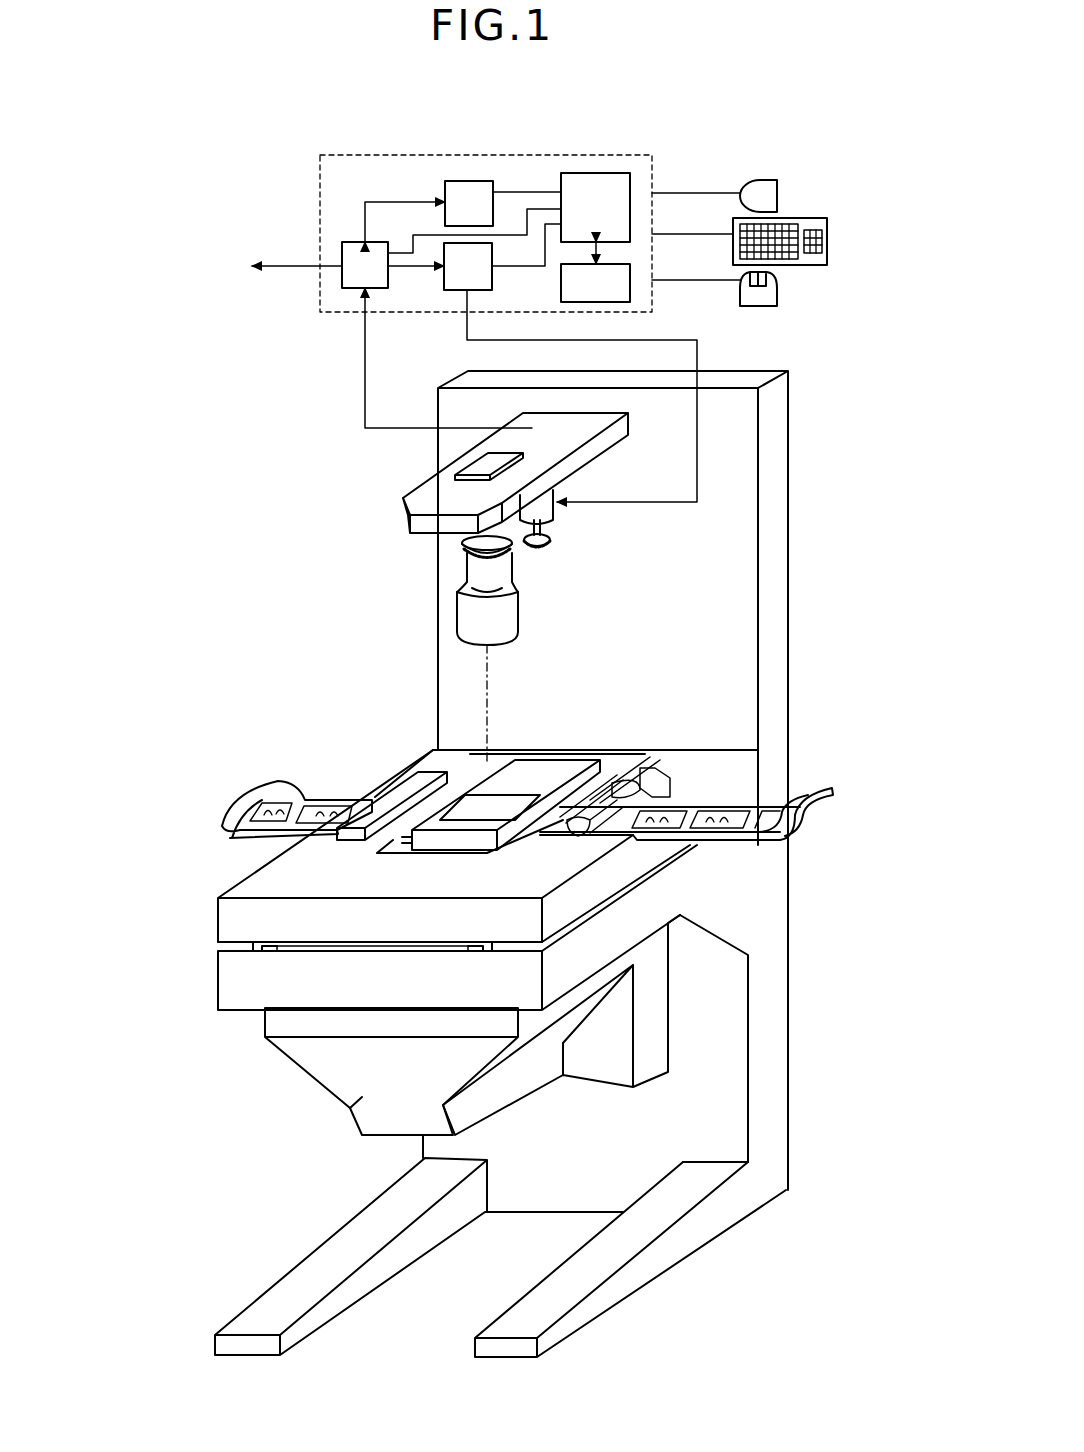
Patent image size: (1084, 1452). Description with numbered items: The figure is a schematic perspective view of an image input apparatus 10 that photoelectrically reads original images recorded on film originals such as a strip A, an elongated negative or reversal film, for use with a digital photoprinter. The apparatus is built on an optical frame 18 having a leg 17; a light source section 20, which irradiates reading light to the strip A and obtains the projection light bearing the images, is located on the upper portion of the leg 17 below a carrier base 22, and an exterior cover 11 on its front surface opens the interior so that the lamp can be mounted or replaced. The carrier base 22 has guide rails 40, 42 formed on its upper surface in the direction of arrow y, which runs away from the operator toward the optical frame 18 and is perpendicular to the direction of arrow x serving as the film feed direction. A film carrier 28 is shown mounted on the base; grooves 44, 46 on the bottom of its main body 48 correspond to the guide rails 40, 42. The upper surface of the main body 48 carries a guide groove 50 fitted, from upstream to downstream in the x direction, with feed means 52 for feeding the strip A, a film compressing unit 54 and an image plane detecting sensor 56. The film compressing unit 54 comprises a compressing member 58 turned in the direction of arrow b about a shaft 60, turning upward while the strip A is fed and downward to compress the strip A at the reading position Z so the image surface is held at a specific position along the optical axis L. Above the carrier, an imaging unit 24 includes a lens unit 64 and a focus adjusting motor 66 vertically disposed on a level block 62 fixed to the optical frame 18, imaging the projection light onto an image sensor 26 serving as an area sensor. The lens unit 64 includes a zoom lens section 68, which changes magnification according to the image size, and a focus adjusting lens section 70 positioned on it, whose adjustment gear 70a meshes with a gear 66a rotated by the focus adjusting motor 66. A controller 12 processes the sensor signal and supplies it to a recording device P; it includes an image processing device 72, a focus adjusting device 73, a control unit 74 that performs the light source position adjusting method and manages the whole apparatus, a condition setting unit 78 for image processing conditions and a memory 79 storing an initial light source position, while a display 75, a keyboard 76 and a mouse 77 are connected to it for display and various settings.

The image input apparatus 10 is at (256, 471).
The exterior cover 11 is at (355, 1110).
The controller 12 is at (318, 180).
The leg 17 is at (768, 1120).
The optical frame 18 is at (442, 662).
The light source section 20 is at (312, 1084).
The carrier base 22 is at (238, 994).
The imaging unit 24 is at (400, 591).
The image sensor 26 is at (468, 488).
The film carrier 28 is at (355, 778).
The guide rail 40 is at (270, 950).
The guide rail 42 is at (478, 951).
The groove 44 is at (284, 934).
The groove 46 is at (462, 935).
The main body 48 is at (244, 920).
The guide groove 50 is at (675, 800).
The feed means 52 is at (684, 765).
The film compressing unit 54 is at (592, 738).
The image plane detecting sensor 56 is at (348, 840).
The compressing member 58 is at (471, 840).
The shaft 60 is at (608, 752).
The level block 62 is at (578, 459).
The lens unit 64 is at (529, 627).
The focus adjusting motor 66 is at (555, 512).
The gear 66a is at (552, 545).
The zoom lens section 68 is at (520, 614).
The focus adjusting lens section 70 is at (507, 573).
The adjustment gear 70a is at (460, 551).
The image processing device 72 is at (382, 281).
The focus adjusting device 73 is at (485, 283).
The control unit 74 is at (611, 223).
The display 75 is at (779, 196).
The keyboard 76 is at (829, 242).
The mouse 77 is at (779, 292).
The condition setting unit 78 is at (486, 219).
The memory 79 is at (611, 299).
The recording device P is at (284, 266).
The strip A is at (806, 815).
The direction of arrow b is at (450, 822).
The optical axis L is at (498, 657).
The reading position Z is at (510, 808).
The direction of arrow x is at (465, 872).
The direction of arrow y is at (590, 893).